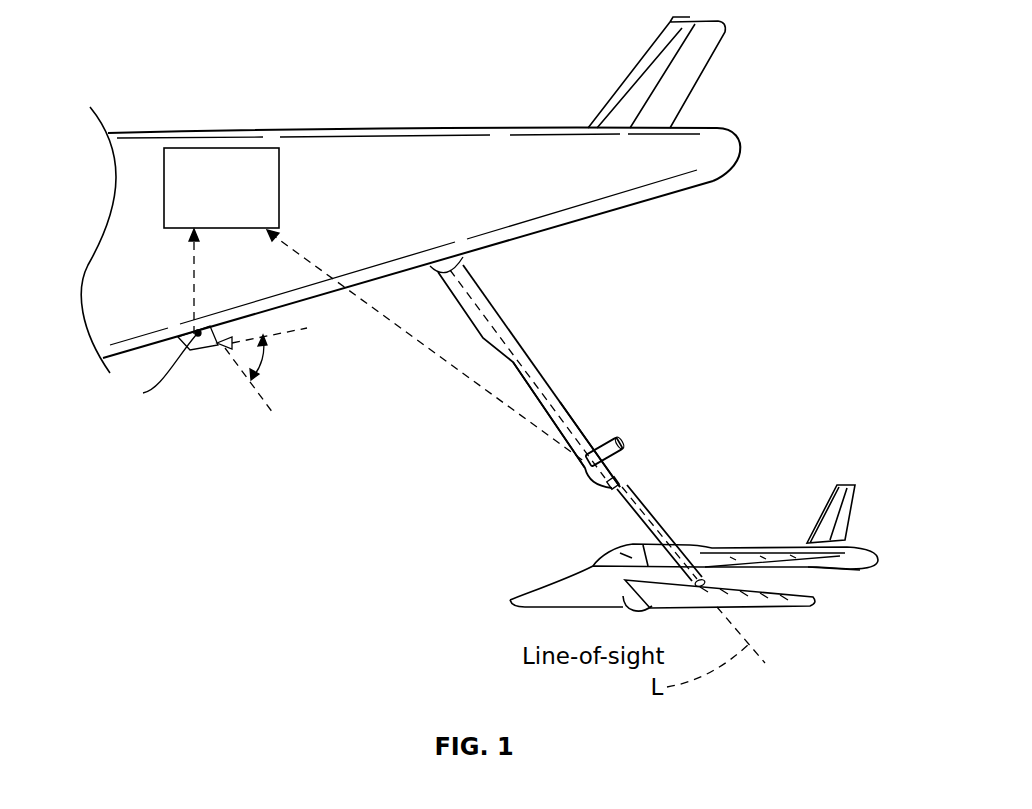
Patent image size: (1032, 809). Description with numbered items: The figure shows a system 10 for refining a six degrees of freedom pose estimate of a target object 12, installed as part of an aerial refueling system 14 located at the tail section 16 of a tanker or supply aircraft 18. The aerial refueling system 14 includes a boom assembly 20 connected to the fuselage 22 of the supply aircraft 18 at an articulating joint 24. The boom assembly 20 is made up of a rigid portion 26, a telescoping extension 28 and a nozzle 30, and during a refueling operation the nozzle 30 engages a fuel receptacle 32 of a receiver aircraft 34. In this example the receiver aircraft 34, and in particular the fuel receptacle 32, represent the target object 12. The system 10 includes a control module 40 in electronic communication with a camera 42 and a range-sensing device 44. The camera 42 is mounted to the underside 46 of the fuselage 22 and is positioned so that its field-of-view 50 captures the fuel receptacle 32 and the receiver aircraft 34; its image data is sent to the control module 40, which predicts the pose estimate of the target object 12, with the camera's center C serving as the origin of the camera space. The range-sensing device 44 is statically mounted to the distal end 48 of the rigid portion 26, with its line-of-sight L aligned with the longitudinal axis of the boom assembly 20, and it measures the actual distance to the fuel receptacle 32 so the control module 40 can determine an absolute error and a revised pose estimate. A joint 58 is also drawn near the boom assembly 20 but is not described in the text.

The system 10 is at (291, 192).
The target object 12 is at (698, 543).
The aerial refueling system 14 is at (410, 195).
The tail section 16 is at (388, 250).
The supply aircraft 18 is at (390, 128).
The boom assembly 20 is at (534, 372).
The fuselage 22 is at (573, 194).
The articulating joint 24 is at (468, 258).
The rigid portion 26 is at (577, 413).
The telescoping extension 28 is at (643, 502).
The nozzle 30 is at (694, 580).
The fuel receptacle 32 is at (643, 605).
The receiver aircraft 34 is at (817, 562).
The control module 40 is at (218, 148).
The camera 42 is at (203, 350).
The range-sensing device 44 is at (617, 473).
The underside 46 is at (323, 306).
The distal end 48 is at (587, 489).
The field-of-view 50 is at (263, 360).
The nozzle joint 58 is at (618, 478).